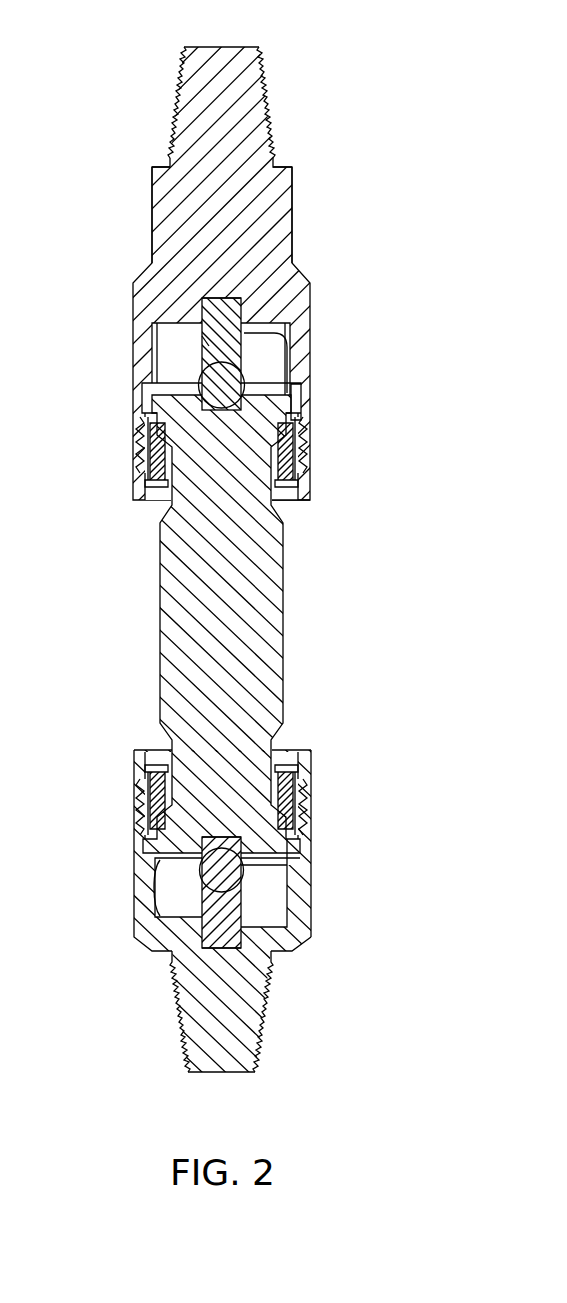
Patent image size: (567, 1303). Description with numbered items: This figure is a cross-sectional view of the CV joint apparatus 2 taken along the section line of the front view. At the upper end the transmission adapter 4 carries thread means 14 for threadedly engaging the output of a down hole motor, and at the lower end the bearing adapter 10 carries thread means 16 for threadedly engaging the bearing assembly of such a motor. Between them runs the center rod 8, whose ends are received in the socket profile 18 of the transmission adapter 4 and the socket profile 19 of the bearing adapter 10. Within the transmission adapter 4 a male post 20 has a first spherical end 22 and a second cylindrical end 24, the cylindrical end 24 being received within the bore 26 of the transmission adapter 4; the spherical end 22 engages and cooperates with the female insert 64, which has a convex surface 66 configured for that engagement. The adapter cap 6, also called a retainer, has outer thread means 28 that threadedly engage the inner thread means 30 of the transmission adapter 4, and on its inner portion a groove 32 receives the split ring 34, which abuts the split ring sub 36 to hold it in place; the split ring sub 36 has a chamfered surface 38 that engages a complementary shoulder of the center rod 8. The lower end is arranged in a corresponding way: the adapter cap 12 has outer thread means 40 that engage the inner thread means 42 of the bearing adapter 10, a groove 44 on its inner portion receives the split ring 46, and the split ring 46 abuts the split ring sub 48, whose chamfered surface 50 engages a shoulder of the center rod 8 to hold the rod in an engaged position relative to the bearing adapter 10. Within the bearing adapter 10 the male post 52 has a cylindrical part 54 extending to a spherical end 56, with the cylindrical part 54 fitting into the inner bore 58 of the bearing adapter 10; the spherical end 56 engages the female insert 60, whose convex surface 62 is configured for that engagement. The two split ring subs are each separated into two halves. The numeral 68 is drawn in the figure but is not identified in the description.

The CV joint apparatus 2 is at (364, 149).
The transmission adapter 4 is at (163, 212).
The adapter cap 6 is at (305, 483).
The center rod 8 is at (270, 598).
The bearing adapter 10 is at (137, 891).
The adapter cap 12 is at (313, 752).
The thread means 14 is at (173, 130).
The thread means 16 is at (175, 997).
The socket profile 18 is at (277, 327).
The socket profile 19 is at (162, 918).
The male post 20 is at (212, 341).
The spherical end 22 is at (200, 374).
The cylindrical end 24 is at (228, 313).
The bore 26 is at (217, 312).
The outer thread means 28 is at (138, 436).
The inner thread means 30 is at (140, 462).
The groove 32 is at (308, 486).
The split ring 34 is at (287, 487).
The split ring sub 36 is at (298, 469).
The chamfered surface 38 is at (302, 425).
The outer thread means 40 is at (139, 800).
The inner thread means 42 is at (138, 818).
The groove 44 is at (142, 750).
The split ring 46 is at (295, 750).
The split ring sub 48 is at (302, 778).
The chamfered surface 50 is at (306, 817).
The male post 52 is at (232, 902).
The cylindrical part 54 is at (245, 937).
The spherical end 56 is at (155, 857).
The inner bore 58 is at (203, 937).
The female insert 60 is at (240, 842).
The convex surface 62 is at (247, 872).
The female insert 64 is at (296, 398).
The convex surface 66 is at (275, 362).
The thrust washer 68 is at (183, 407).